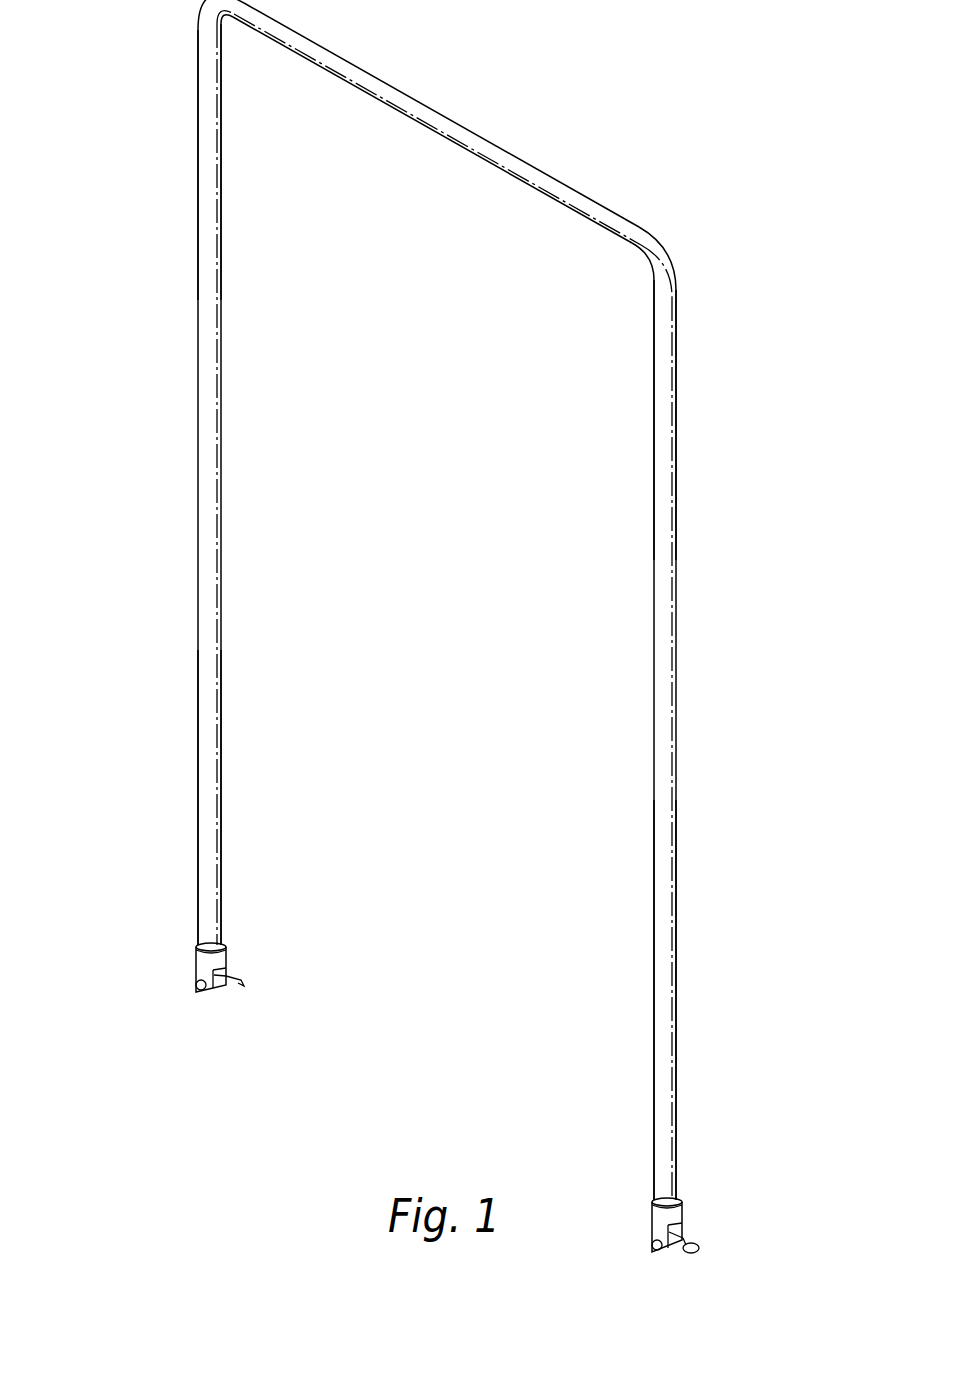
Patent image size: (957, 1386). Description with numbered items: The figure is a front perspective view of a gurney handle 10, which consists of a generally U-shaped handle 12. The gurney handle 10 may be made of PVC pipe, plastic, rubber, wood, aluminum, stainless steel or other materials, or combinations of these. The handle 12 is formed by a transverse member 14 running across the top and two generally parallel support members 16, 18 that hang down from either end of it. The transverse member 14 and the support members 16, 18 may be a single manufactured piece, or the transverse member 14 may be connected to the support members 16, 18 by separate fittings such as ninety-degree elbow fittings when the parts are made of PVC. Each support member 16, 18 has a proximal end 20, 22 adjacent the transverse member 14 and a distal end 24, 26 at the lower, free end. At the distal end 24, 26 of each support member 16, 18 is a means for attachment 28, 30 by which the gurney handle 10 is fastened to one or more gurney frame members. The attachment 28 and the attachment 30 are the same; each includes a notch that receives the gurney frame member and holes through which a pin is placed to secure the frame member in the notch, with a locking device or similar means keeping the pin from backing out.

The gurney handle 10 is at (148, 329).
The handle 12 is at (583, 192).
The transverse member 14 is at (418, 98).
The support member 16 is at (198, 548).
The support member 18 is at (676, 682).
The proximal end 20 is at (198, 140).
The proximal end 22 is at (676, 442).
The distal end 24 is at (198, 782).
The distal end 26 is at (677, 1061).
The means for attachment 28 is at (181, 935).
The means for attachment 30 is at (708, 1195).